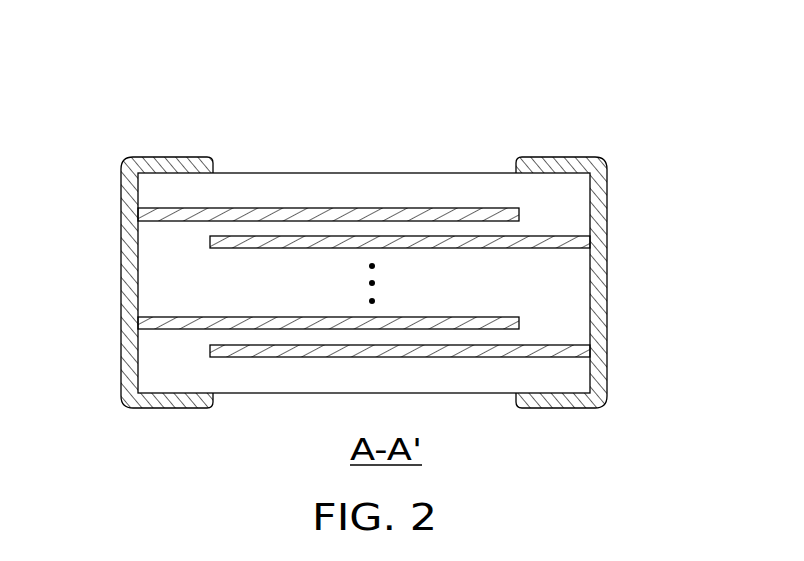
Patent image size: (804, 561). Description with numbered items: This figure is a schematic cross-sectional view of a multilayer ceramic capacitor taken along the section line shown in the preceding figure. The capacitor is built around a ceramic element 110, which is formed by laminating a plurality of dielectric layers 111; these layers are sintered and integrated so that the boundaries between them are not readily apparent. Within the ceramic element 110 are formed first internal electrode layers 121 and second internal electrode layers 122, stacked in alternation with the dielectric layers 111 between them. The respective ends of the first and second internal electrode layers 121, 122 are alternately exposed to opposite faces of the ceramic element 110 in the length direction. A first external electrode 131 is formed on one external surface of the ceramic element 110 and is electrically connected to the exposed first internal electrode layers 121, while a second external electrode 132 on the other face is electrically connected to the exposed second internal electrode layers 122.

The ceramic element 110 is at (313, 172).
The dielectric layer 111 is at (513, 335).
The first internal electrode layer 121 is at (143, 210).
The second internal electrode layer 122 is at (562, 351).
The first external electrode 131 is at (172, 160).
The second external electrode 132 is at (562, 160).